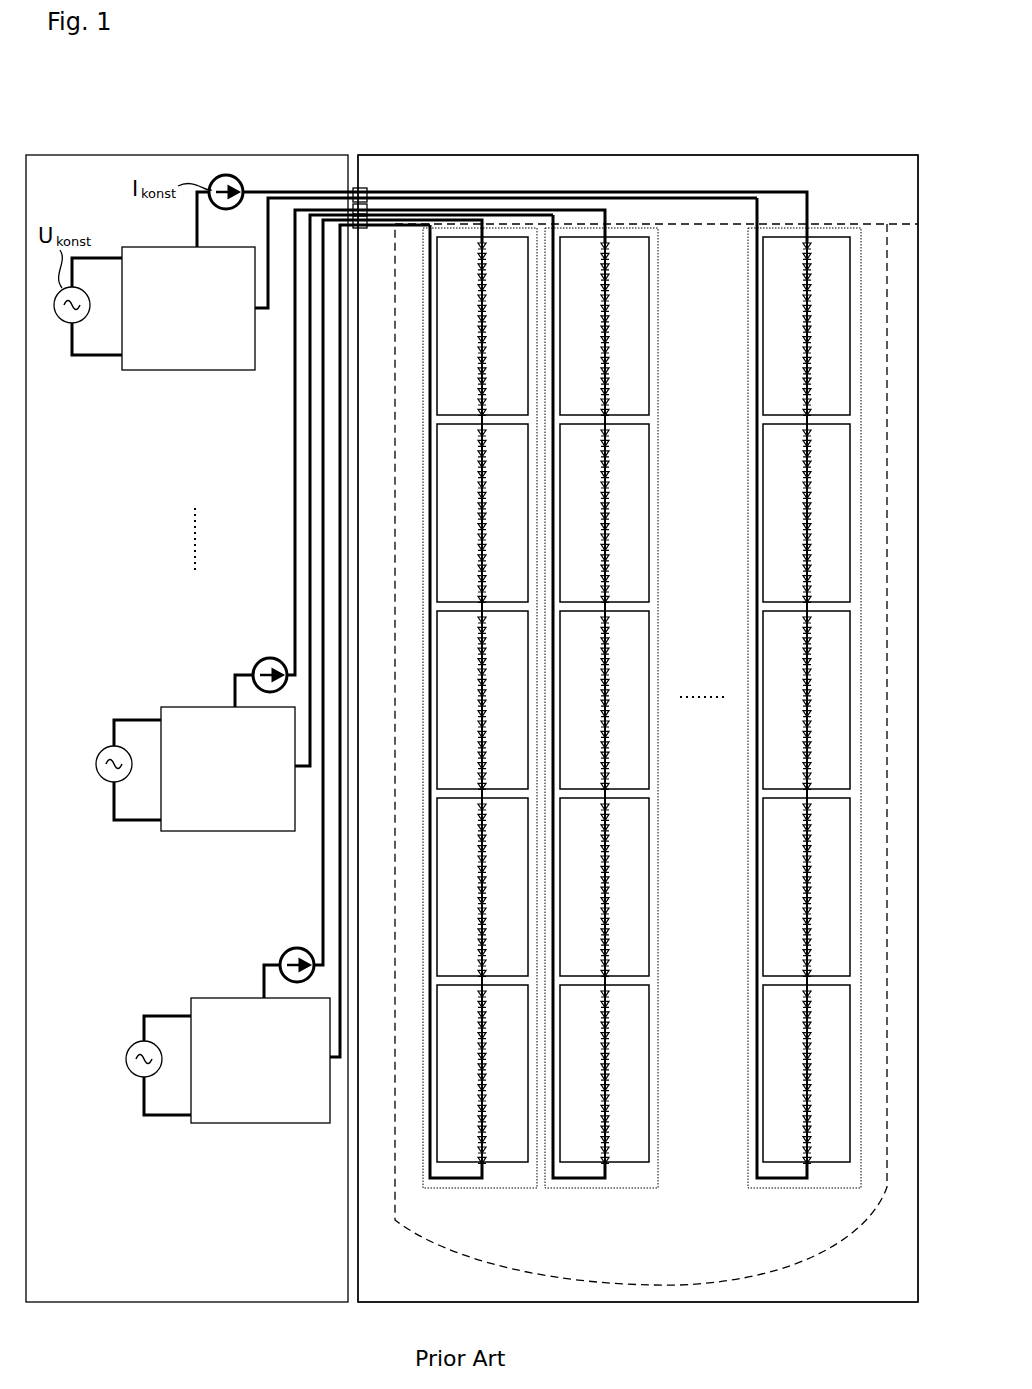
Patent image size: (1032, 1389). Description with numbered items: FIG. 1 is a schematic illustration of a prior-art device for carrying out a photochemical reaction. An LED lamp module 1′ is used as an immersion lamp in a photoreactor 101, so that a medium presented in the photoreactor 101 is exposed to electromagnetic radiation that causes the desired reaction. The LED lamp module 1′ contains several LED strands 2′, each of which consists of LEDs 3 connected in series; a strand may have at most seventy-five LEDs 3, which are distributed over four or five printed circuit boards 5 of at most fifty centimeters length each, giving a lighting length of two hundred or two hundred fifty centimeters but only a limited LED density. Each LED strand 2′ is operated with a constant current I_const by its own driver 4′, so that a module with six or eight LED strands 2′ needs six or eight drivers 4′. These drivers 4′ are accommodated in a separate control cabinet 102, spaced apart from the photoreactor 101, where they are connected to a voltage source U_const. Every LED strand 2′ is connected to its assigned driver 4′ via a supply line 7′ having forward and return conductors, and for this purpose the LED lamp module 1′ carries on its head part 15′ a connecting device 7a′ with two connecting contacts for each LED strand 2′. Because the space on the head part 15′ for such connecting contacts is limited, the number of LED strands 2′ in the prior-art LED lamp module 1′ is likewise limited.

The LED lamp module 1′ is at (440, 1232).
The LED strand 2′ is at (505, 1185).
The LEDs 3 is at (606, 322).
The driver 4′ is at (182, 355).
The printed circuit board 5 is at (640, 368).
The supply line 7′ is at (285, 190).
The connecting device 7a′ is at (367, 221).
The head part 15′ is at (643, 176).
The photoreactor 101 is at (375, 160).
The control cabinet 102 is at (68, 160).